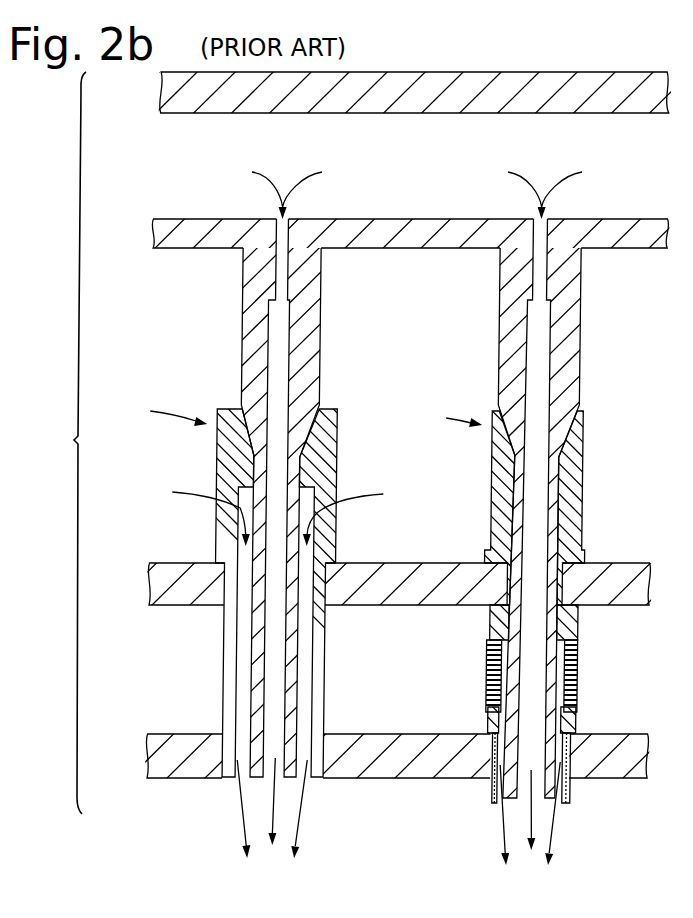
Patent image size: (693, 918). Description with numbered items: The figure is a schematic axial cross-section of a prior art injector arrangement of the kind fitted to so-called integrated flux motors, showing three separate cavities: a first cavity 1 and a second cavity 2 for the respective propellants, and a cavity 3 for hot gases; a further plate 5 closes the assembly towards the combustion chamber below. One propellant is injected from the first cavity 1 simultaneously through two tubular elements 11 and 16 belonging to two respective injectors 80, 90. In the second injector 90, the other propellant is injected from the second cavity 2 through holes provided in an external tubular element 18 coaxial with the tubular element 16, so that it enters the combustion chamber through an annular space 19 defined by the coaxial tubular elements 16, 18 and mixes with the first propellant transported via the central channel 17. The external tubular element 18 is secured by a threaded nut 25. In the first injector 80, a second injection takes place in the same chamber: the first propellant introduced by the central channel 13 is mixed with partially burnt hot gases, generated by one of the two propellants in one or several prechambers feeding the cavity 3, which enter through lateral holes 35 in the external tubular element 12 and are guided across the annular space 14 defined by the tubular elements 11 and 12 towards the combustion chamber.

The first cavity 1 is at (442, 157).
The second cavity 2 is at (392, 655).
The cavity for hot gases 3 is at (179, 313).
The lower plate 5 is at (416, 835).
The tubular element 11 is at (247, 352).
The external tubular element 12 is at (229, 454).
The central channel 13 is at (295, 347).
The annular space 14 is at (240, 659).
The tubular element 16 is at (565, 365).
The central channel 17 is at (556, 322).
The external tubular element 18 is at (581, 467).
The annular space 19 is at (572, 718).
The threaded nut 25 is at (581, 672).
The lateral holes 35 is at (230, 521).
The injector 80 is at (160, 410).
The injector 90 is at (452, 410).